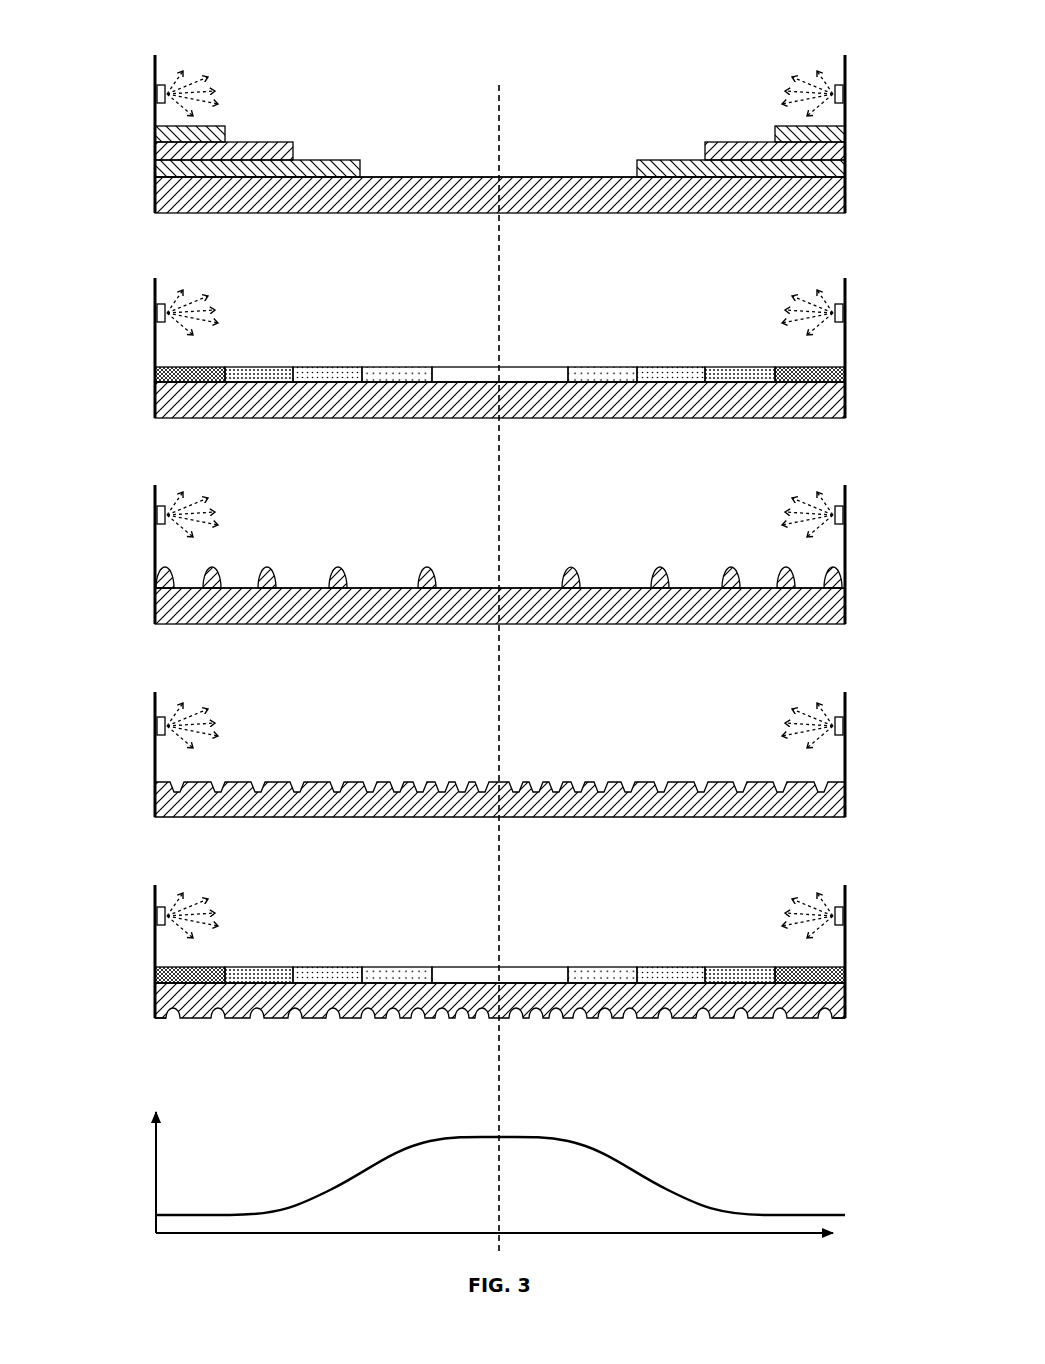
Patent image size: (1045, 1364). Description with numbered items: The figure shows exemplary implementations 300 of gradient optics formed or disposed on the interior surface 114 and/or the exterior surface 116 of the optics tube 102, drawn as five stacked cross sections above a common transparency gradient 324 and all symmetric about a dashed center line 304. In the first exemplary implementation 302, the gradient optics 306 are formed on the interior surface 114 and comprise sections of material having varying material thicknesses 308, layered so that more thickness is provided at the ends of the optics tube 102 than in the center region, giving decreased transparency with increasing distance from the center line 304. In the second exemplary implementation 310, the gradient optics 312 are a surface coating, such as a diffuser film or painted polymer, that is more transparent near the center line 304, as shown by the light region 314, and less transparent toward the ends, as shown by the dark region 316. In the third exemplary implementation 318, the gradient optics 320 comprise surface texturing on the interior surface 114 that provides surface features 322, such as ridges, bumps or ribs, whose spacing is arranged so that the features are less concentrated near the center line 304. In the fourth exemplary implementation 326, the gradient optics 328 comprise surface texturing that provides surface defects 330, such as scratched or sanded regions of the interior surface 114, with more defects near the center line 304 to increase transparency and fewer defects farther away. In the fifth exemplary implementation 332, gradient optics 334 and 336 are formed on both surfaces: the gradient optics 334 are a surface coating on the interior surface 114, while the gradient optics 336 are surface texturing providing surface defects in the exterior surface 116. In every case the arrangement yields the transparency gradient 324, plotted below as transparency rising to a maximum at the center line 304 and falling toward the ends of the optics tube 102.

The exemplary implementations of gradient optics 300 is at (731, 44).
The first exemplary implementation 302 is at (494, 125).
The center line 304 is at (497, 107).
The gradient optics 306 is at (554, 120).
The varying material thicknesses 308 is at (249, 114).
The second exemplary implementation 310 is at (488, 341).
The gradient optics 312 is at (548, 356).
The light region 314 is at (460, 371).
The dark region 316 is at (209, 371).
The third exemplary implementation 318 is at (488, 547).
The gradient optics 320 is at (548, 553).
The surface features 322 is at (331, 565).
The transparency gradient 324 is at (117, 1096).
The fourth exemplary implementation 326 is at (488, 746).
The gradient optics 328 is at (857, 793).
The surface defects 330 is at (438, 765).
The fifth exemplary implementation 332 is at (491, 967).
The gradient optics 334 is at (857, 983).
The gradient optics 336 is at (857, 1002).
The optics tube 102 is at (792, 200).
The interior surface 114 is at (481, 181).
The exterior surface 116 is at (689, 1023).